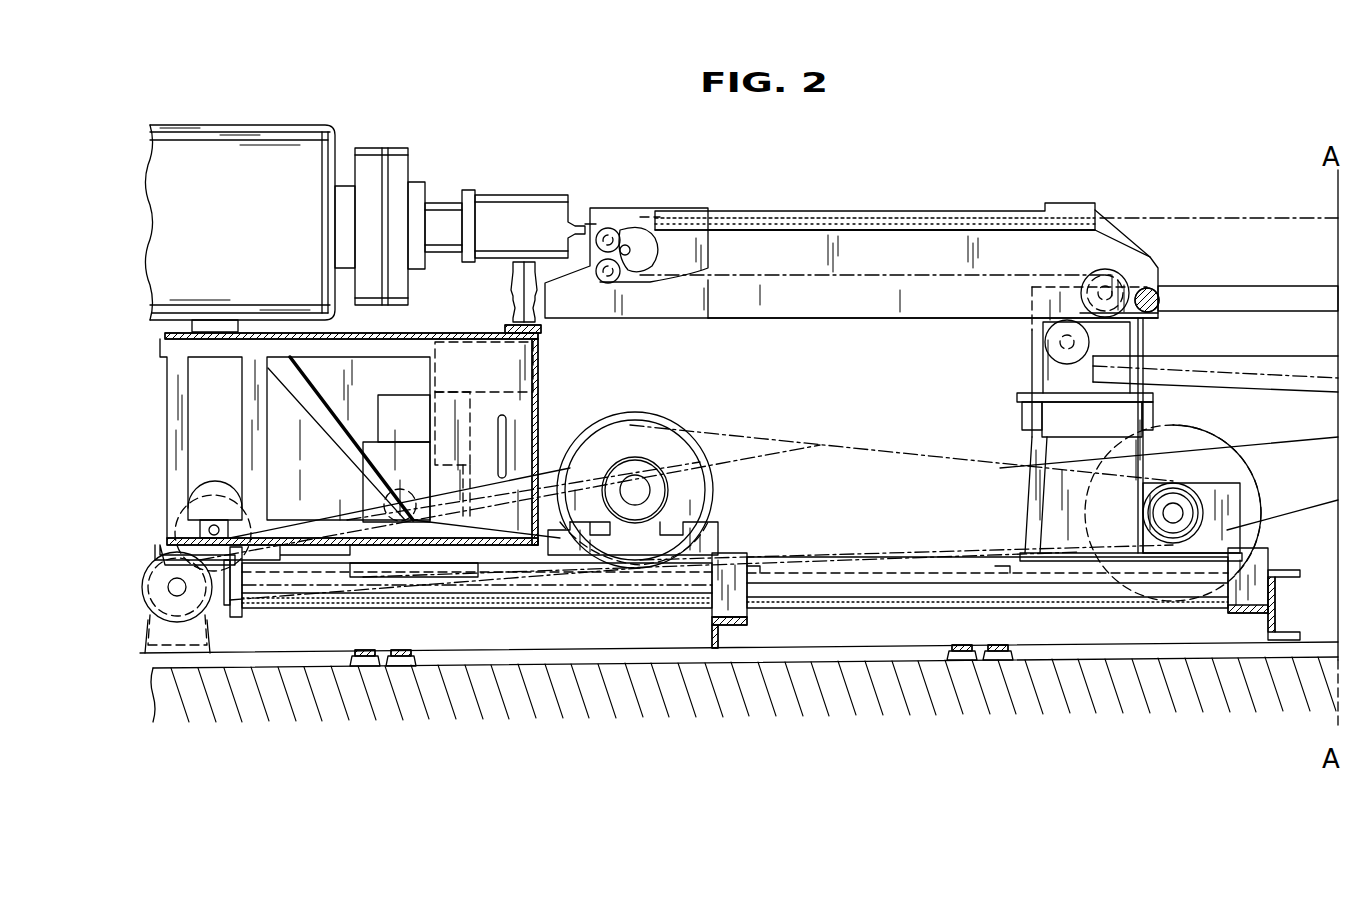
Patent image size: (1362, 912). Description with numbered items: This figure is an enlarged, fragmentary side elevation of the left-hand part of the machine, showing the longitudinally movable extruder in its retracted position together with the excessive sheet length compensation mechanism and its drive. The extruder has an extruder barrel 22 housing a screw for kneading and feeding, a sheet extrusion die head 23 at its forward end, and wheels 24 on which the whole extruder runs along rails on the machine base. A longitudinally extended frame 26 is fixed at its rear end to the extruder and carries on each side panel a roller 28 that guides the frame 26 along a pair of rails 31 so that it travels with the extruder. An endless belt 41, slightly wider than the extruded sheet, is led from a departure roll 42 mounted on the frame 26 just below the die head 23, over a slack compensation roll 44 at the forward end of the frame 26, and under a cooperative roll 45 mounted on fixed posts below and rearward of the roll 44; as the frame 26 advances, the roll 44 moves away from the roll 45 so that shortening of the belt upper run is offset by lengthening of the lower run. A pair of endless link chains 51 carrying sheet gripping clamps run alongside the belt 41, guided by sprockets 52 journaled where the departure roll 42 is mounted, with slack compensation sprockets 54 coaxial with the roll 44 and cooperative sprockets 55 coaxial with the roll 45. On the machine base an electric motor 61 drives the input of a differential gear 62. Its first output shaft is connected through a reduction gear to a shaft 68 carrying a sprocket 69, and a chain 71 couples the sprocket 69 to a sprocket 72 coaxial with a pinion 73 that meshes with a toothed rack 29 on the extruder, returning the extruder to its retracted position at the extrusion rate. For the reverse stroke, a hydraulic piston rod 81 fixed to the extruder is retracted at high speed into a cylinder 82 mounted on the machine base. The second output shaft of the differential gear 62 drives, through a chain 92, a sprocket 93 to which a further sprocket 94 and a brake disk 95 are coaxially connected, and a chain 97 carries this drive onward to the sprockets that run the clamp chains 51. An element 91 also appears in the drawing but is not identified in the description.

The extruder barrel 22 is at (262, 142).
The sheet extrusion die head 23 is at (520, 200).
The wheels 24 is at (215, 500).
The frame 26 is at (935, 324).
The roller 28 is at (1158, 306).
The toothed rack 29 is at (172, 545).
The rails 31 is at (1282, 300).
The endless belt 41 is at (868, 232).
The departure roll 42 is at (604, 230).
The slack compensation roll 44 is at (1110, 285).
The cooperative roll 45 is at (1048, 345).
The endless link chains 51 is at (940, 212).
The sprockets 52 is at (640, 234).
The slack compensation sprockets 54 is at (1120, 291).
The cooperative sprockets 55 is at (1060, 358).
The electric motor 61 is at (396, 480).
The differential gear 62 is at (641, 410).
The shaft 68 is at (635, 485).
The sprocket 69 is at (668, 478).
The chain 71 is at (492, 580).
The sprocket 72 is at (200, 620).
The pinion 73 is at (158, 575).
The piston rod 81 is at (333, 598).
The cylinder 82 is at (930, 575).
The drive belt 91 is at (678, 428).
The chain 92 is at (882, 447).
The sprocket 93 is at (1174, 482).
The sprocket 94 is at (1152, 514).
The disk 95 is at (1178, 432).
The chain 97 is at (1262, 462).